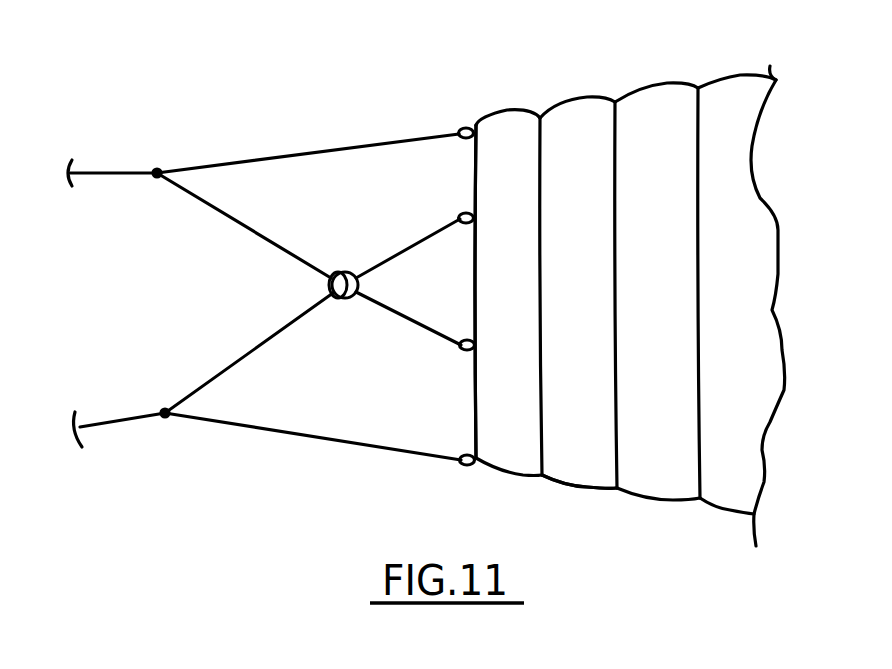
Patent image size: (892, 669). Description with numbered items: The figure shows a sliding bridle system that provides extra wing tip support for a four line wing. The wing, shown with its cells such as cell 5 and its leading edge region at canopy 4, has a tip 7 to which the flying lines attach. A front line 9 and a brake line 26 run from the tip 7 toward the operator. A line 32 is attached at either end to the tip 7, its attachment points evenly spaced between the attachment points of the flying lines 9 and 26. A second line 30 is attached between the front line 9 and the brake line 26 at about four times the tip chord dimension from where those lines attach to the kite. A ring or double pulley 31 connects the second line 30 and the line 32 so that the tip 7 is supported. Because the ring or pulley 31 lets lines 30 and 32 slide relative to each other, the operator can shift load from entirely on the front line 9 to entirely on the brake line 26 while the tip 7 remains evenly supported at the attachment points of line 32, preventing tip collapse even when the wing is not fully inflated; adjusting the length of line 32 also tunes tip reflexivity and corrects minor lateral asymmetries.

The canopy 4 is at (581, 98).
The canopy cell 5 is at (572, 487).
The tip 7 is at (481, 289).
The front line 9 is at (323, 148).
The brake line 26 is at (360, 457).
The second line 30 is at (262, 238).
The ring or double pulley 31 is at (337, 270).
The line 32 is at (450, 345).